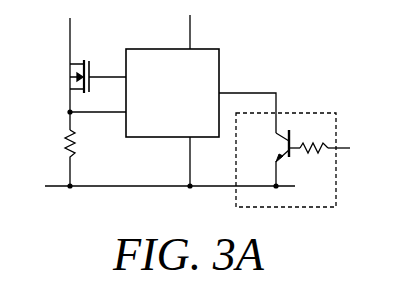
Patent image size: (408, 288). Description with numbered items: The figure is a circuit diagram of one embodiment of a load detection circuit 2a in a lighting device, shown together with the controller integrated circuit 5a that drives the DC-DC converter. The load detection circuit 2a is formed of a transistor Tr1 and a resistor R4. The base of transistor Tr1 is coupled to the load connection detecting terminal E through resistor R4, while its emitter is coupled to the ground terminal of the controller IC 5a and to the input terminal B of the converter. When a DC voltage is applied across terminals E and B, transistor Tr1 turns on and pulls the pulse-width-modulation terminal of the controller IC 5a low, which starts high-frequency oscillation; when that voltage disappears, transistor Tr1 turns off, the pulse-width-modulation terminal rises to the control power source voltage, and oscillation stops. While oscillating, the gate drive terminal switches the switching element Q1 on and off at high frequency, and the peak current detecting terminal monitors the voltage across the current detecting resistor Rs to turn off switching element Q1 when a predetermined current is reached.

The controller integrated circuit 5a is at (213, 49).
The load detection circuit 2a is at (304, 139).
The switching element Q1 is at (98, 74).
The current detecting resistor Rs is at (54, 158).
The transistor Tr1 is at (271, 158).
The resistor R4 is at (314, 162).
The input terminal B is at (160, 187).
The load connection detecting terminal E is at (347, 149).